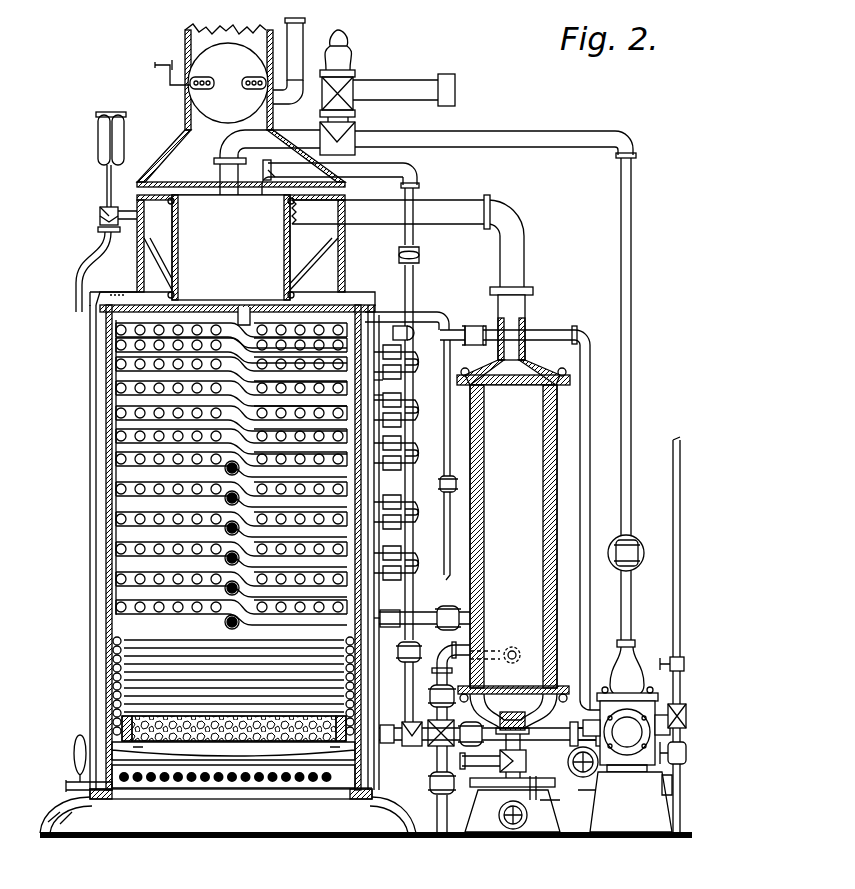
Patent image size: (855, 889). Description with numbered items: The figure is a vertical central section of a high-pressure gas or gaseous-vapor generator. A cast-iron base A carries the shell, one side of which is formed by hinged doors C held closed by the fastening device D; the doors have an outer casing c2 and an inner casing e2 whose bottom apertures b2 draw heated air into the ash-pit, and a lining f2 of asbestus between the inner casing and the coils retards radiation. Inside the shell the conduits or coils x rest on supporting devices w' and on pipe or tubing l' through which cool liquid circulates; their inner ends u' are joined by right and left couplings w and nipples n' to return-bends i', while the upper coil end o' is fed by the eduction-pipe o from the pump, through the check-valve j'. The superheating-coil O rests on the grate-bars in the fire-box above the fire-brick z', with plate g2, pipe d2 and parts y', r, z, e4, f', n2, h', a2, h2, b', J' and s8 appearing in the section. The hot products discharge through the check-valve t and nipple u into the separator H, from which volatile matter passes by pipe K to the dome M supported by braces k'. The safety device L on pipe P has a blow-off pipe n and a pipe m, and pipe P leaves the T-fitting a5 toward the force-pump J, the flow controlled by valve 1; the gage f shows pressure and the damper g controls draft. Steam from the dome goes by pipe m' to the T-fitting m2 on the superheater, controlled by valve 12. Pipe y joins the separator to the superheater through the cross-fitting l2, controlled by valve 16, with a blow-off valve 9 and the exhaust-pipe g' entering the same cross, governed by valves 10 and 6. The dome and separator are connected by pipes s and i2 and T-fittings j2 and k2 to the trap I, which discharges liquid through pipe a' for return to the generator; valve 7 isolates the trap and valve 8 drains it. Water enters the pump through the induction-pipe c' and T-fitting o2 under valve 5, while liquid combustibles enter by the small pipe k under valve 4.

The base A is at (228, 811).
The doors C is at (90, 612).
The fastening device D is at (74, 748).
The dome M is at (231, 247).
The gravel bed N is at (233, 752).
The superheating-coil O is at (233, 686).
The separator H is at (513, 514).
The trap I is at (512, 783).
The force-pump J is at (626, 729).
The pump base J' is at (631, 802).
The pipe K is at (422, 245).
The safety device L is at (338, 52).
The pipe P is at (267, 155).
The gage f is at (106, 212).
The damper g is at (212, 77).
The pipe l is at (499, 405).
The pipe m is at (404, 86).
The blow-off pipe n is at (296, 61).
The small pipe k is at (672, 634).
The eduction-pipe o is at (513, 518).
The check-valve t is at (424, 618).
The conduits or coils x is at (231, 474).
The pipe z is at (446, 771).
The valve 1 is at (630, 553).
The valve 4 is at (669, 658).
The valve 5 is at (673, 747).
The valve 6 is at (586, 762).
The valve 8 is at (518, 815).
The valve 9 is at (446, 783).
The valve 10 is at (473, 727).
The valve 12 is at (402, 652).
The valve 16 is at (447, 699).
The T-fitting a5 is at (337, 138).
The fitting e4 is at (420, 256).
The pipe m' is at (354, 443).
The return-bends i' is at (404, 462).
The check-valve j' is at (474, 325).
The fitting f' is at (453, 484).
The right and left couplings w is at (387, 508).
The braces k' is at (220, 217).
The plate g2 is at (123, 300).
The outer casing of metal c2 is at (112, 353).
The tray d2 is at (112, 374).
The inner casing of metal e2 is at (112, 398).
The lining of asbestus board or cement f2 is at (112, 440).
The supporting devices w' is at (90, 506).
The pipe or tubing l' is at (225, 545).
The fire-brick z' is at (236, 747).
The support y' is at (202, 813).
The apertures b2 is at (351, 791).
The pipe r is at (427, 606).
The nipple u is at (465, 632).
The pipe y is at (451, 663).
The T-fitting m2 is at (387, 719).
The fitting n2 is at (386, 744).
The valve h' is at (489, 742).
The cross-fitting l2 is at (436, 741).
The pipe i2 is at (514, 742).
The exhaust-pipe g' is at (574, 736).
The T-fitting j2 is at (519, 761).
The T-fitting k2 is at (512, 792).
The valve 7 is at (538, 789).
The pipe a' is at (602, 793).
The base b' is at (562, 811).
The T-fitting o2 is at (663, 705).
The induction-pipe c' is at (666, 779).
The pipe a2 is at (383, 769).
The pipe h2 is at (385, 791).
The upper coil end o' is at (407, 326).
The inner ends u' is at (378, 443).
The nipples n' is at (387, 443).
The pump handle s8 is at (482, 756).